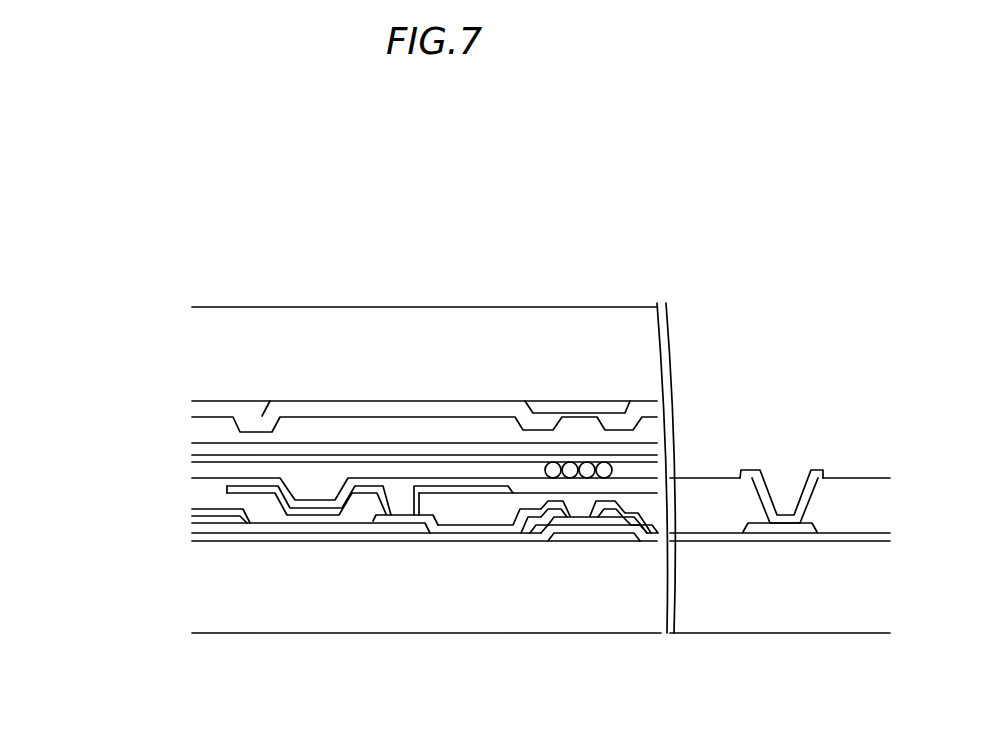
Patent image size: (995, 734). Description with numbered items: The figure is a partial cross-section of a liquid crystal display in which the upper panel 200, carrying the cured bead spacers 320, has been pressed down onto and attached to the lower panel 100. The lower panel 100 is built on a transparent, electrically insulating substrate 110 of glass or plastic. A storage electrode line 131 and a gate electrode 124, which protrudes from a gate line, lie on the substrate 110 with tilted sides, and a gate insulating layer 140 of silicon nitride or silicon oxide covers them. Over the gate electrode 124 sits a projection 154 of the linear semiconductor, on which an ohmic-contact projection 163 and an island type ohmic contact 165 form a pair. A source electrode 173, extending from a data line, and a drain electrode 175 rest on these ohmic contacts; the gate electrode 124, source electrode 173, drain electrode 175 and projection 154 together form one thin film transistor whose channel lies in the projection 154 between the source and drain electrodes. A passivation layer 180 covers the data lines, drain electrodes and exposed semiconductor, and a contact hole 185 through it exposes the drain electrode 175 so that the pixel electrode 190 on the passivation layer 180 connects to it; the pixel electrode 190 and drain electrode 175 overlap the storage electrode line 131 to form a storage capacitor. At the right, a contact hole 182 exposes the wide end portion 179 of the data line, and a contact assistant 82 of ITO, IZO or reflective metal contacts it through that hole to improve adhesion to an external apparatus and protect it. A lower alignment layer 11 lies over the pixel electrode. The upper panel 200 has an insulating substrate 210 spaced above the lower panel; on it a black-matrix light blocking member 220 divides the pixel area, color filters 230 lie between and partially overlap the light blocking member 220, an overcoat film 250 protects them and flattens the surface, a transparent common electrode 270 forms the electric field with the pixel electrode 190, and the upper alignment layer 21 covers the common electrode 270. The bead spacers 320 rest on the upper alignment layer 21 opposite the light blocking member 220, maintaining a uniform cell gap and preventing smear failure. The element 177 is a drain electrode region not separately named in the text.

The upper panel 200 is at (121, 331).
The insulating substrate 210 is at (203, 353).
The light blocking member 220 is at (570, 408).
The color filter 230 is at (343, 408).
The overcoat film 250 is at (203, 427).
The common electrode 270 is at (220, 453).
The bead spacer 320 is at (587, 465).
The upper alignment layer 21 is at (220, 462).
The lower alignment layer 11 is at (203, 487).
The lower panel 100 is at (130, 582).
The insulating substrate 110 is at (255, 610).
The storage electrode line 131 is at (298, 535).
The gate insulating layer 140 is at (853, 537).
The gate electrode 124 is at (592, 530).
The projection of semiconductor 154 is at (574, 522).
The projection of ohmic contact 163 is at (612, 518).
The island type ohmic contact 165 is at (532, 518).
The source electrode 173 is at (628, 508).
The drain electrode 175 is at (550, 508).
The drain electrode expansion 177 is at (406, 518).
The passivation layer 180 is at (705, 493).
The contact hole 185 is at (416, 505).
The pixel electrode 190 is at (452, 489).
The end portion of data line 179 is at (782, 527).
The contact hole 182 is at (762, 502).
The contact assistant 82 is at (812, 473).